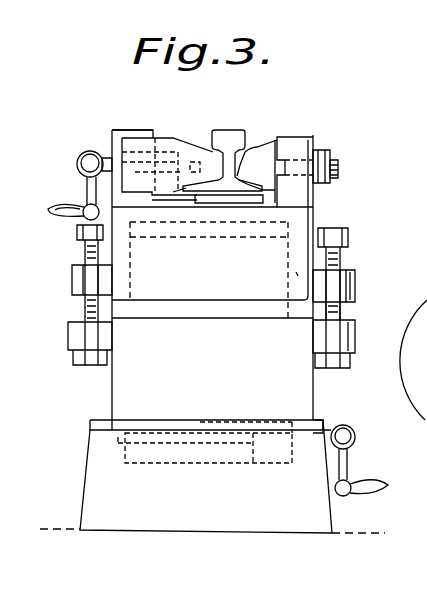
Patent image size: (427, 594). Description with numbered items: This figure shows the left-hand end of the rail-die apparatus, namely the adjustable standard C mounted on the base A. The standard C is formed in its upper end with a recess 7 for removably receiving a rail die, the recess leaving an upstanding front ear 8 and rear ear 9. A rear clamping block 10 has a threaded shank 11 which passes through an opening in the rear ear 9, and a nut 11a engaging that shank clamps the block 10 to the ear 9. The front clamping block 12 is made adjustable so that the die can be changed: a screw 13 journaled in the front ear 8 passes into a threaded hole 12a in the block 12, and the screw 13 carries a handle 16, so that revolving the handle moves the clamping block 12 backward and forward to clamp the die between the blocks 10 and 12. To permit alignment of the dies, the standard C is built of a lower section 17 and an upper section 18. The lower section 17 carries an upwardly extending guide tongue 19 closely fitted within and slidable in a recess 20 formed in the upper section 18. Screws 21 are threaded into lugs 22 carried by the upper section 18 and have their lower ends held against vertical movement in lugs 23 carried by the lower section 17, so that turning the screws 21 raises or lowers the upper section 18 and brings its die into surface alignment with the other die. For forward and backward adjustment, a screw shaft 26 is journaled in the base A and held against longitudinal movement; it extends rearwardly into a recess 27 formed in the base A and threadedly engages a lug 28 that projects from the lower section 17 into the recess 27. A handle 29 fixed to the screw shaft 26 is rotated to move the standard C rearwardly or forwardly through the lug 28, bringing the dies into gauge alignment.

The recess 7 is at (158, 138).
The front ear 8 is at (116, 130).
The rear ear 9 is at (288, 142).
The rear clamping block 10 is at (252, 153).
The threaded shank 11 is at (338, 164).
The nut 11a is at (325, 152).
The front clamping block 12 is at (194, 143).
The threaded hole 12a is at (178, 203).
The screw 13 is at (106, 153).
The handle 16 is at (62, 206).
The lower section 17 is at (292, 390).
The upper section 18 is at (334, 263).
The guide tongue 19 is at (297, 270).
The recess 20 is at (240, 313).
The screws 21 is at (78, 232).
The lugs 22 is at (72, 283).
The lugs 23 is at (66, 347).
The screw shaft 26 is at (324, 424).
The recess 27 is at (163, 463).
The lug 28 is at (237, 463).
The handle 29 is at (374, 484).
The base A is at (98, 468).
The adjustable standard C is at (172, 290).